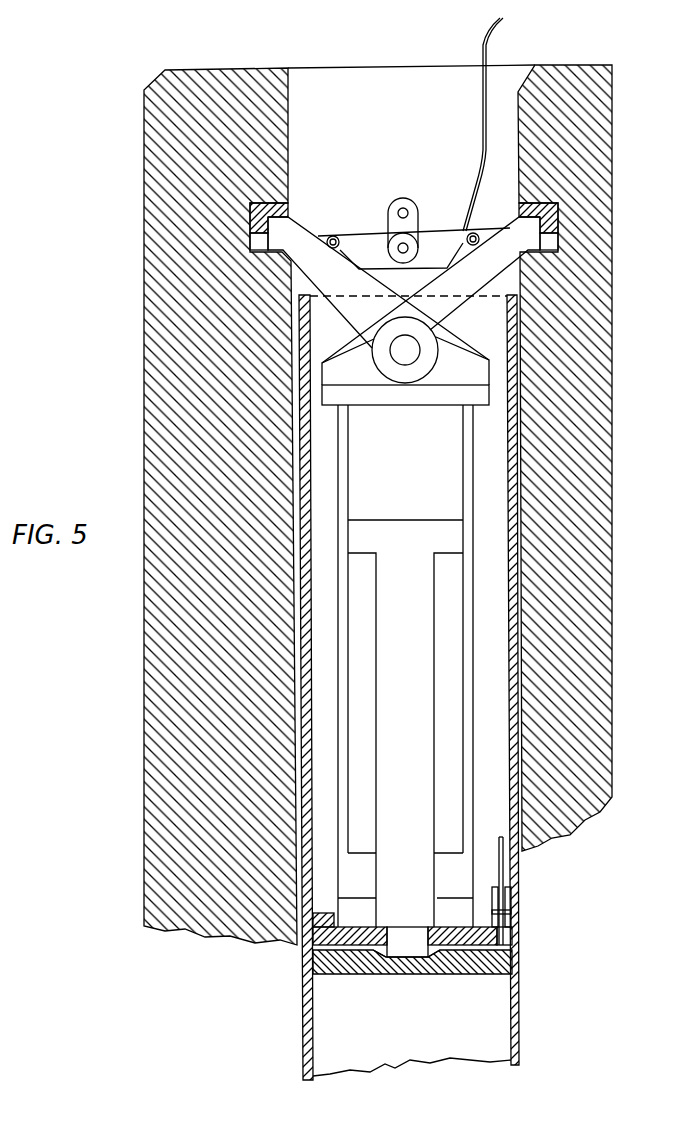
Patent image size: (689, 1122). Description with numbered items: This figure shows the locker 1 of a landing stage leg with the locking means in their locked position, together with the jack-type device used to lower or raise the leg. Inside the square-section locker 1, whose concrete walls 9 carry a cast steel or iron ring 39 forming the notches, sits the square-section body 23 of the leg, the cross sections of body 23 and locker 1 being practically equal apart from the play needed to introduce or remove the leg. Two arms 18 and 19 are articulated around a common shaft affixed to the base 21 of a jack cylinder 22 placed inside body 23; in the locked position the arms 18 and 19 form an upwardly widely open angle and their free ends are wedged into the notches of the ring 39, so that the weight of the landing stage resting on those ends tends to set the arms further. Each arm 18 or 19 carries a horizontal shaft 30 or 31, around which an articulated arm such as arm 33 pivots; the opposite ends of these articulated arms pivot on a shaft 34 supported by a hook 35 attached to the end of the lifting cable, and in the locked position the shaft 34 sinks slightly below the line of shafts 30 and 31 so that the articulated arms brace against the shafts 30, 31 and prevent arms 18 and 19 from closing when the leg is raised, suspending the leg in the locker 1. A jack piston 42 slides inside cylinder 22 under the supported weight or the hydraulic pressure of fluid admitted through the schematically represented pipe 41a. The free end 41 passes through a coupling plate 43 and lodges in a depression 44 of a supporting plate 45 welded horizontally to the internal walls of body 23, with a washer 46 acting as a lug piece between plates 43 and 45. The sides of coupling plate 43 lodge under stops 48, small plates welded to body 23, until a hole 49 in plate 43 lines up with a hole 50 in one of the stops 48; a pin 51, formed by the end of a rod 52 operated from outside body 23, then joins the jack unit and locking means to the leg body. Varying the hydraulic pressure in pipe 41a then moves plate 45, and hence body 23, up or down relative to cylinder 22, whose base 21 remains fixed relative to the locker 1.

The locker 1 is at (508, 80).
The formation wall 9 is at (606, 546).
The arm 18 is at (470, 307).
The arm 19 is at (347, 317).
The base 21 is at (462, 363).
The jack cylinder 22 is at (467, 510).
The square section body 23 is at (509, 456).
The horizontal shaft 30 is at (474, 233).
The horizontal shaft 31 is at (333, 236).
The arm 33 is at (367, 243).
The shaft 34 is at (407, 250).
The hook 35 is at (406, 213).
The cast steel or iron ring 39 is at (281, 213).
The free end of pipe 41 is at (411, 955).
The pipe 41a is at (495, 122).
The jack piston 42 is at (413, 713).
The coupling plate 43 is at (463, 934).
The hollow part or depression 44 is at (432, 953).
The supporting plate 45 is at (352, 972).
The washer 46 is at (380, 953).
The stops 48 is at (325, 909).
The hole 49 is at (504, 934).
The hole 50 is at (492, 922).
The pin 51 is at (502, 881).
The rod 52 is at (499, 854).